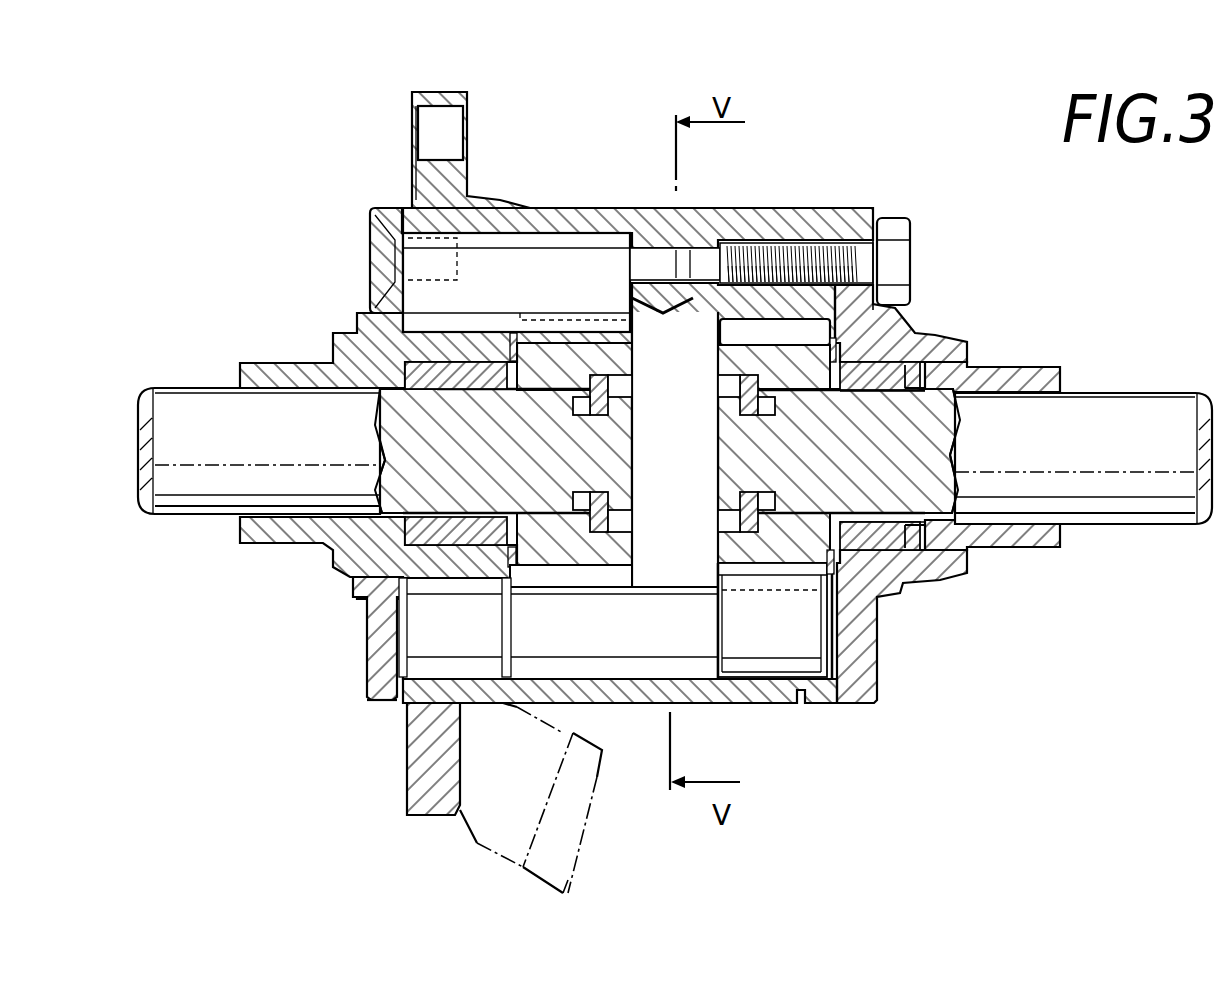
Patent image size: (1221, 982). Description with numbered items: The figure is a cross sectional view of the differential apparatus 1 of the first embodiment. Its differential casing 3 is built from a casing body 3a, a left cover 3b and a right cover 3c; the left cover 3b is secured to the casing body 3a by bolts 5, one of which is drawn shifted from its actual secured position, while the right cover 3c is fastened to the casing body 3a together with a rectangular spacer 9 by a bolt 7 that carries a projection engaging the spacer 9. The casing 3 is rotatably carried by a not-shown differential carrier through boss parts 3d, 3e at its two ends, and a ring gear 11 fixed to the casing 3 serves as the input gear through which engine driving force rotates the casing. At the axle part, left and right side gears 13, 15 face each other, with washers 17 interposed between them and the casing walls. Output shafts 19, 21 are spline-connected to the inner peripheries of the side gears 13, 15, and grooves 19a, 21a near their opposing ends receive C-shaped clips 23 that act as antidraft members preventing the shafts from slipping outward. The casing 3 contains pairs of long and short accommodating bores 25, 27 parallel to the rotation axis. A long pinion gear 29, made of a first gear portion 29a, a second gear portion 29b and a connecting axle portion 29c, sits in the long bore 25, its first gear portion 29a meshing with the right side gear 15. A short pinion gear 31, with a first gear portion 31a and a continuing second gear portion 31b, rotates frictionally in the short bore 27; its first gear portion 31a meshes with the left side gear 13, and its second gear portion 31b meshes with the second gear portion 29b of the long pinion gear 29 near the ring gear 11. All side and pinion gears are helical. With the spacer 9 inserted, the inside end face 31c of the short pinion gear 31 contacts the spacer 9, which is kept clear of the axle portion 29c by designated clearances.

The differential apparatus 1 is at (675, 478).
The differential casing 3 is at (650, 379).
The casing body 3a is at (577, 207).
The left cover 3b is at (414, 195).
The right cover 3c is at (858, 207).
The boss part 3d is at (270, 362).
The boss part 3e is at (1012, 366).
The bolt 5 is at (372, 250).
The bolt 7 is at (893, 232).
The spacer 9 is at (685, 433).
The ring gear 11 is at (603, 792).
The left side gear 13 is at (550, 380).
The right side gear 15 is at (858, 400).
The washer 17 is at (505, 385).
The output shaft 19 is at (210, 522).
The groove 19a is at (600, 425).
The output shaft 21 is at (1108, 527).
The groove 21a is at (805, 400).
The C-shaped clip 23 is at (765, 497).
The long accommodating bore 25 is at (605, 657).
The short accommodating bore 27 is at (628, 246).
The long pinion gear 29 is at (365, 645).
The first gear portion 29a is at (793, 680).
The second gear portion 29b is at (380, 705).
The axle portion 29c is at (728, 665).
The short pinion gear 31 is at (527, 248).
The first gear portion 31a is at (555, 243).
The second gear portion 31b is at (490, 308).
The inside end face 31c is at (652, 313).